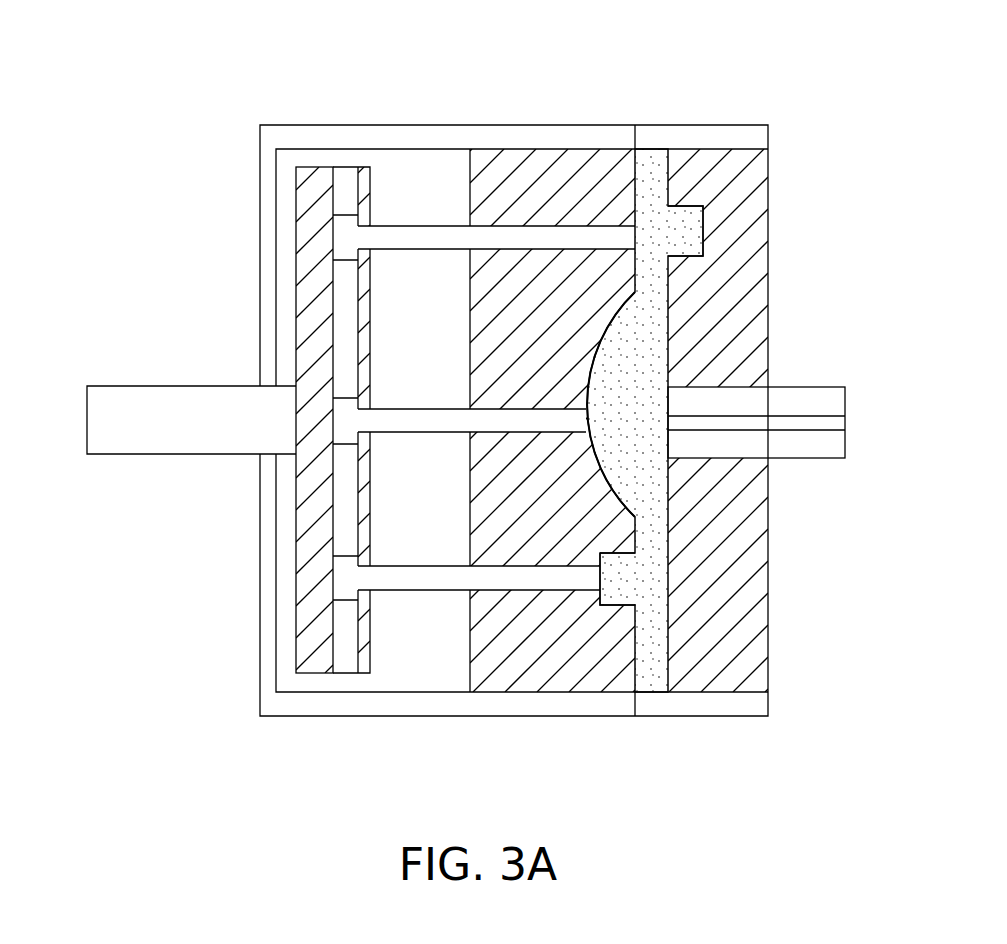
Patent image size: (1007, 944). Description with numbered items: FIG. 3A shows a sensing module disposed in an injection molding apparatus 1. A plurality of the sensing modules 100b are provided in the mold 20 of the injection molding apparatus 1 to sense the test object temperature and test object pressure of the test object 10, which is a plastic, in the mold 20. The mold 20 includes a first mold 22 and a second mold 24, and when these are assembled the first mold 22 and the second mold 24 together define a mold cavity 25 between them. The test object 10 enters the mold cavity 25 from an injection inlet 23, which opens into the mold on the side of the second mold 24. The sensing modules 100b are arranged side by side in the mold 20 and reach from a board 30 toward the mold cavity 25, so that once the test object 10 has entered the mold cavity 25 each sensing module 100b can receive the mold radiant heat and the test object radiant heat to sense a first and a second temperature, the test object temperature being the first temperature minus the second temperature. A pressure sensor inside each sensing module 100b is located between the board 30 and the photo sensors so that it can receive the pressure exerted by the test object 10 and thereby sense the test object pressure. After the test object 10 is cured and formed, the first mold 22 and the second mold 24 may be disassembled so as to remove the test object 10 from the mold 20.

The injection molding apparatus 1 is at (757, 738).
The test object 10 is at (640, 338).
The mold 20 is at (619, 351).
The first mold 22 is at (600, 168).
The injection inlet 23 is at (846, 423).
The second mold 24 is at (718, 377).
The mold cavity 25 is at (635, 660).
The board 30 is at (312, 182).
The sensing module 100b is at (531, 213).